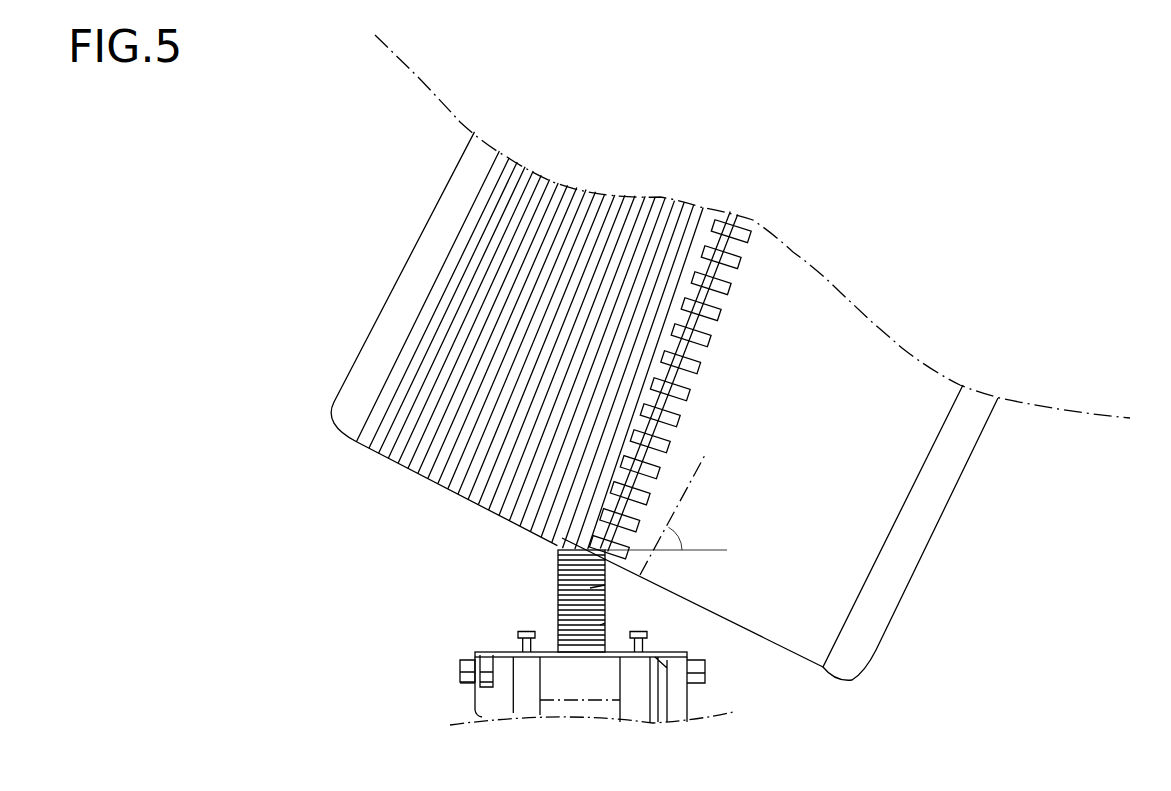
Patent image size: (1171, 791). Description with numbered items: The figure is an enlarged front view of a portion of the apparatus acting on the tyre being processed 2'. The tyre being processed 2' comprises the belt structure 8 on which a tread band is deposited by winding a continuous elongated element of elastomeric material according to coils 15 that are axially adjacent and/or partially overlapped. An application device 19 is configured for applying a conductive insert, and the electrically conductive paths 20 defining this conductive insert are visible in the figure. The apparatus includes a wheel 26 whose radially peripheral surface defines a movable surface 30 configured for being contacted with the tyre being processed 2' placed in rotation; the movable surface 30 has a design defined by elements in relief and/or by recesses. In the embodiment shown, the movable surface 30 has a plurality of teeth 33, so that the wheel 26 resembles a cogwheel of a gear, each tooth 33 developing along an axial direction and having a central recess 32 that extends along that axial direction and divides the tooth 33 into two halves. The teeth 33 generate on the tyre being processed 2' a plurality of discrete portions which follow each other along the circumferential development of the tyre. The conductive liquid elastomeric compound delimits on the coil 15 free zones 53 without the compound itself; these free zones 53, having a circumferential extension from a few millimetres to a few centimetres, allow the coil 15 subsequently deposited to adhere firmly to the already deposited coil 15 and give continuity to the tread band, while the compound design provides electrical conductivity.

The tyre being processed 2' is at (932, 535).
The belt structure 8 is at (770, 600).
The coils 15 is at (574, 345).
The application device 19 is at (461, 693).
The electrically conductive paths 20 is at (703, 365).
The wheel 26 is at (557, 588).
The movable surface 30 is at (515, 604).
The central recess 32 is at (605, 623).
The teeth 33 is at (605, 585).
The free zones 53 is at (712, 293).